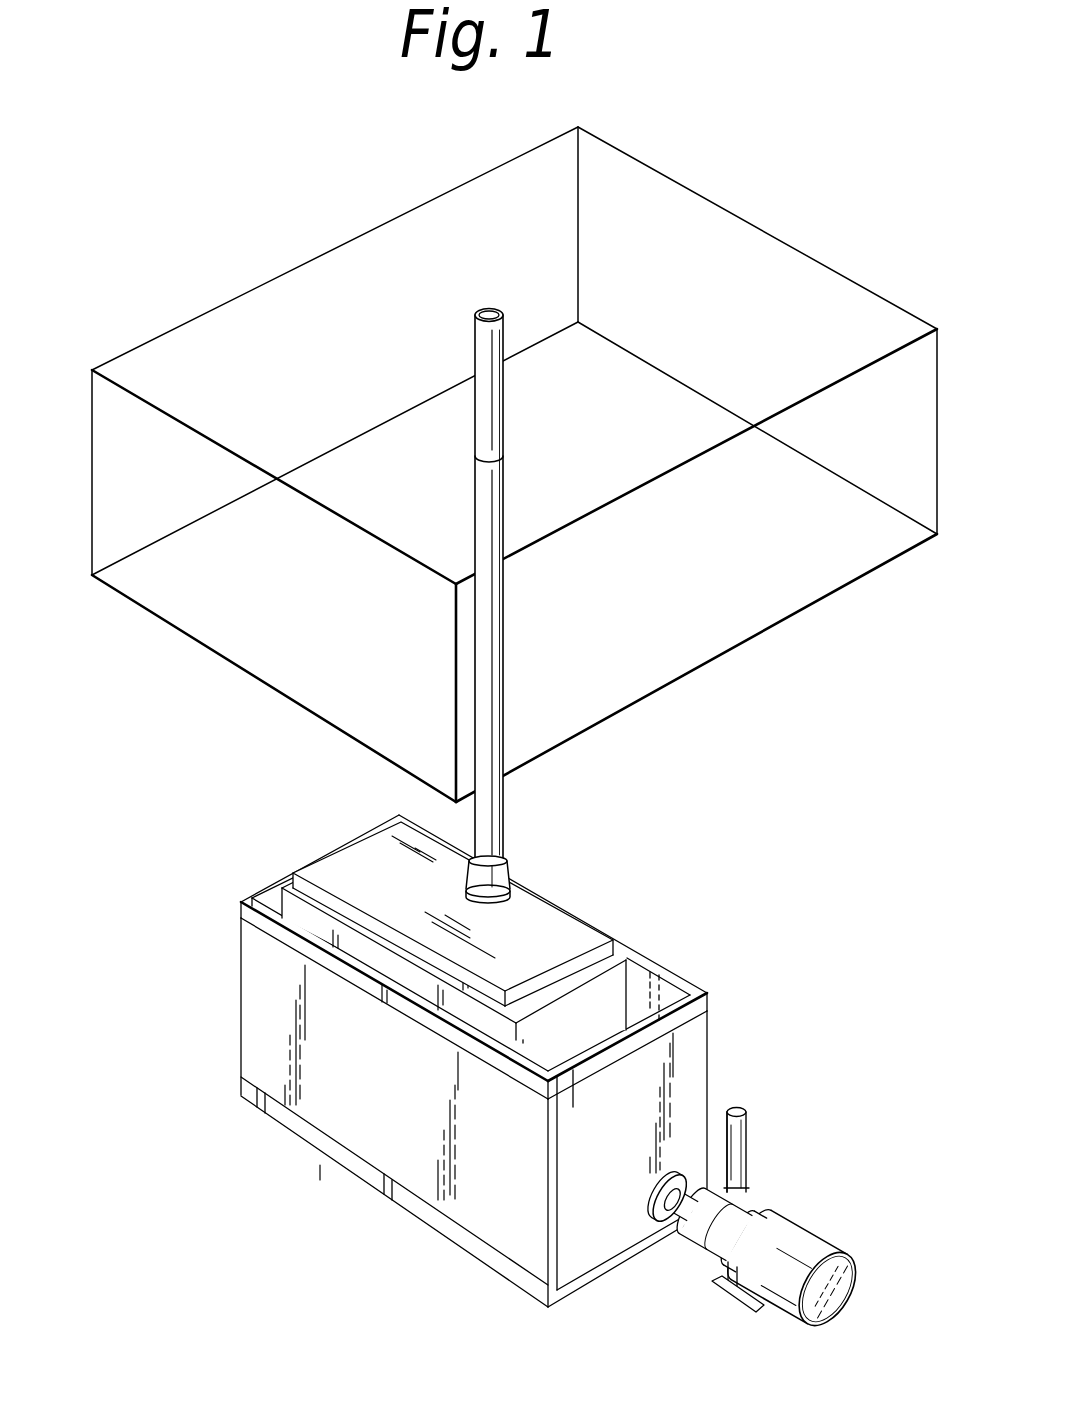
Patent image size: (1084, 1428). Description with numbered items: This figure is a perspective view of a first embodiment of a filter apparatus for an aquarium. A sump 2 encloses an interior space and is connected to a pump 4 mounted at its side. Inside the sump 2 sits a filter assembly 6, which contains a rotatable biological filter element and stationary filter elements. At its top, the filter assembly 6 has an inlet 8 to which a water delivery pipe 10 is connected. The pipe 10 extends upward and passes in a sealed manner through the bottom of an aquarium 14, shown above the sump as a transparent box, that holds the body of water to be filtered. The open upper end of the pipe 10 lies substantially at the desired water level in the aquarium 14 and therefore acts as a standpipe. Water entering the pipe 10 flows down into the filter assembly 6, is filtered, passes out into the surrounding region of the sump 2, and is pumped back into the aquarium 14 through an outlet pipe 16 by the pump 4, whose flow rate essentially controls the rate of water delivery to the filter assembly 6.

The sump 2 is at (363, 1150).
The pump 4 is at (803, 1237).
The filter assembly 6 is at (580, 876).
The inlet 8 is at (510, 864).
The water delivery pipe 10 is at (505, 786).
The aquarium 14 is at (297, 238).
The outlet pipe 16 is at (750, 1135).